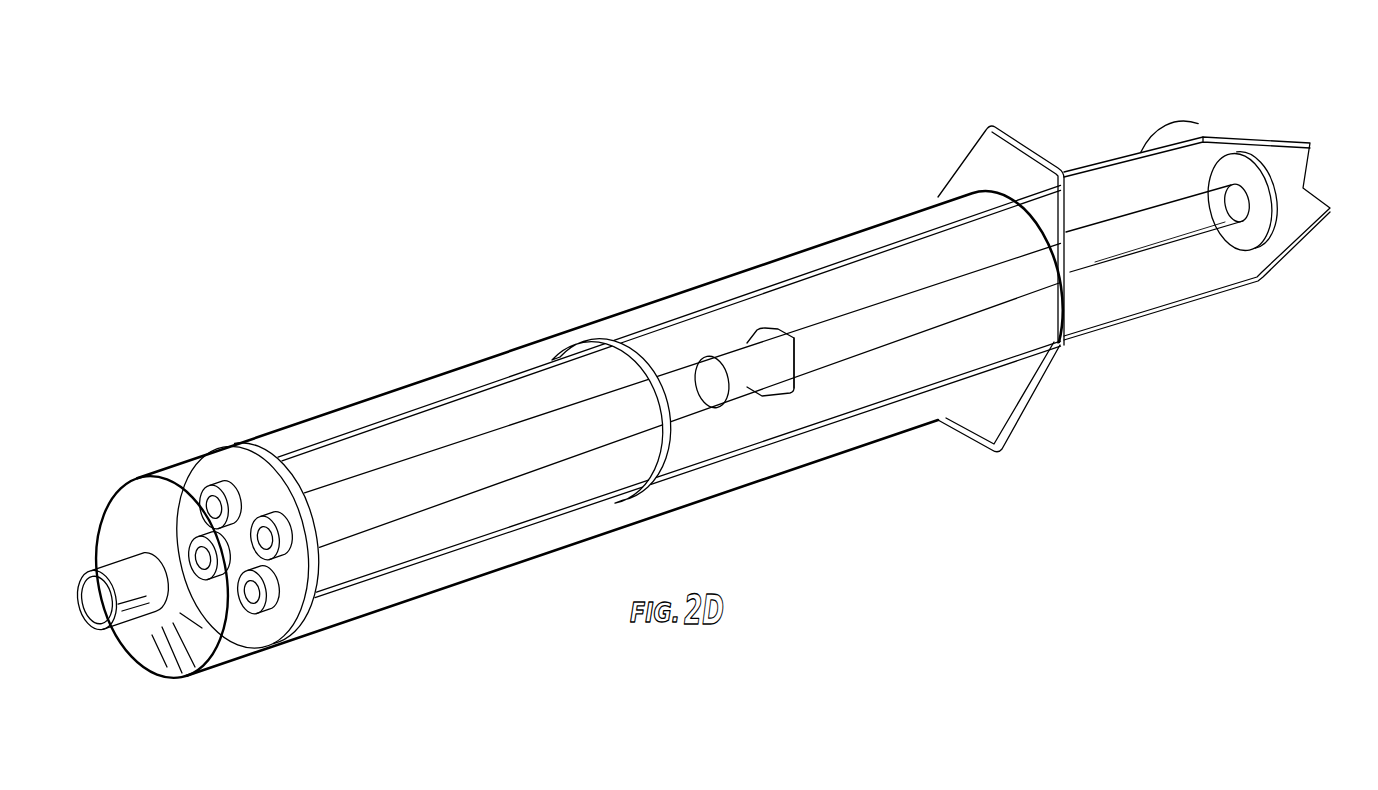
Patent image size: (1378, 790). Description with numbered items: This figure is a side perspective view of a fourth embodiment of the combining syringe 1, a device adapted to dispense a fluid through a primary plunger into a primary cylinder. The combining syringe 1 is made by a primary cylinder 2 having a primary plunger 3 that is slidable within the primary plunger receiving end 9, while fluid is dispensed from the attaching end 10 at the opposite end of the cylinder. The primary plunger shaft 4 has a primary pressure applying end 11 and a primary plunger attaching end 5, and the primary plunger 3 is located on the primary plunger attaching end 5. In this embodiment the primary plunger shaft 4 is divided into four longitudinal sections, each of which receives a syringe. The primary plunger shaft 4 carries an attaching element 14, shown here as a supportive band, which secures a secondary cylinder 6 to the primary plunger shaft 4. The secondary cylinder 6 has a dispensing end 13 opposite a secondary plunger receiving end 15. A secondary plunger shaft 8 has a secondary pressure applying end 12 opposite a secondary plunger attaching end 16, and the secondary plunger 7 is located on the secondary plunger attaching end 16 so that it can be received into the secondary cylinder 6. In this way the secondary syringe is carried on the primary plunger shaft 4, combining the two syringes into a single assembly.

The combining syringe 1 is at (178, 426).
The primary cylinder 2 is at (451, 368).
The primary plunger 3 is at (259, 620).
The primary plunger shaft 4 is at (765, 288).
The primary plunger attaching end 5 is at (333, 521).
The secondary cylinder 6 is at (468, 472).
The secondary plunger 7 is at (707, 387).
The secondary plunger shaft 8 is at (1174, 228).
The primary plunger receiving end 9 is at (1083, 168).
The attaching end 10 is at (120, 532).
The primary pressure applying end 11 is at (1328, 175).
The secondary pressure applying end 12 is at (1278, 219).
The dispensing end 13 is at (263, 546).
The attaching element 14 is at (637, 366).
The secondary plunger receiving end 15 is at (796, 372).
The secondary plunger attaching end 16 is at (748, 383).